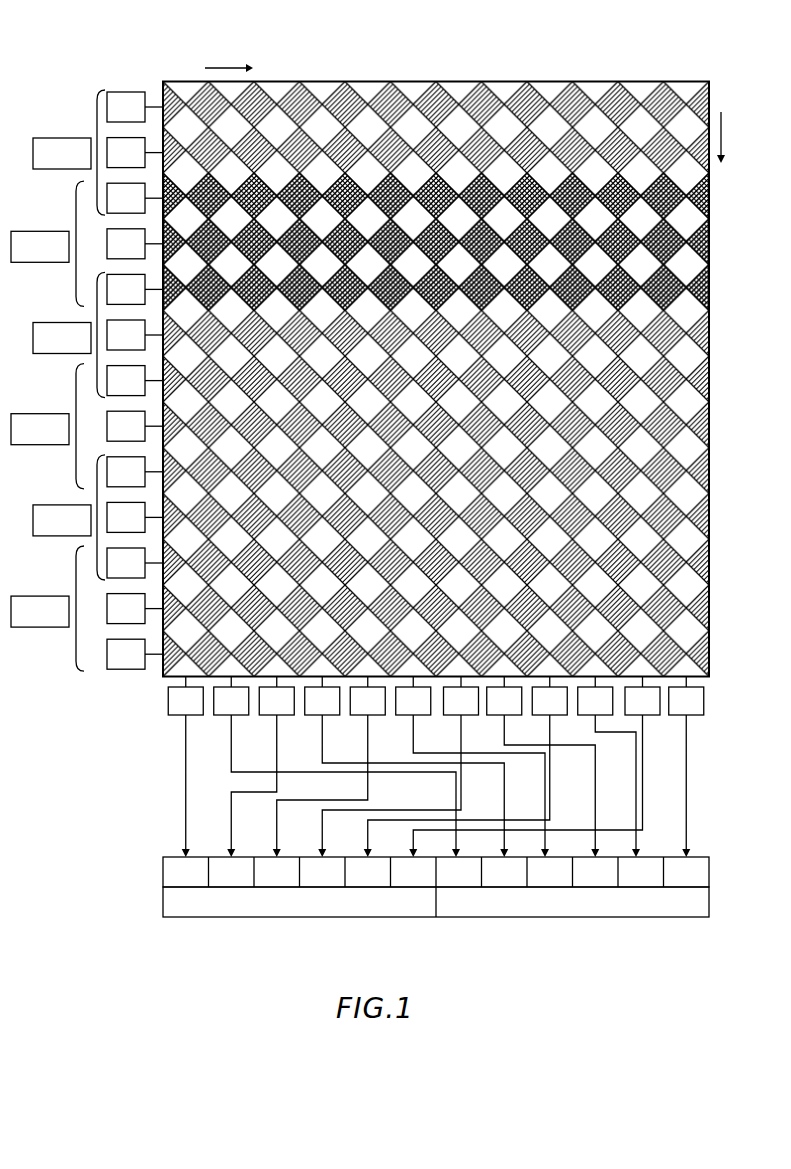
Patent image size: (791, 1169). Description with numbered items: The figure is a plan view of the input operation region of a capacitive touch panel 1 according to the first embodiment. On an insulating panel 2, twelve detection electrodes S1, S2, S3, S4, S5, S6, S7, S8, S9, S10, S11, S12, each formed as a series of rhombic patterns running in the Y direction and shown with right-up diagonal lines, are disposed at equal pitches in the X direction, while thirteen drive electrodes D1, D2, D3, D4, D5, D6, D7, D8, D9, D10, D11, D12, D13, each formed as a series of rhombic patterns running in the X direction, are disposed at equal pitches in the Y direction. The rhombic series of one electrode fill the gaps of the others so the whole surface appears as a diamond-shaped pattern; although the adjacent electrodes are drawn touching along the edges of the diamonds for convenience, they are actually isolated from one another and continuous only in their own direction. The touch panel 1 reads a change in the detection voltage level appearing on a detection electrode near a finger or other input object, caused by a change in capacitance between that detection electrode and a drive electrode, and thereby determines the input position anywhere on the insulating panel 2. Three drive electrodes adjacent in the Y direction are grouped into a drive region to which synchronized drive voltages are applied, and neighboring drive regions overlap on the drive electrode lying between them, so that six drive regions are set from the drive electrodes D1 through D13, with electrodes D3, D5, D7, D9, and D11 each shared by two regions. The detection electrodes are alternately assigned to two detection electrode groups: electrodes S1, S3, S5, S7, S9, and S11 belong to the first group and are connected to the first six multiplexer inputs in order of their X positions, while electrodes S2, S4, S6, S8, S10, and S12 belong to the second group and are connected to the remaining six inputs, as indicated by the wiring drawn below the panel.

The capacitive touch panel 1 is at (378, 52).
The insulating panel 2 is at (513, 82).
The drive electrode D1 is at (135, 107).
The drive electrode D2 is at (135, 153).
The drive electrode D3 is at (135, 198).
The drive electrode D4 is at (135, 244).
The drive electrode D5 is at (135, 289).
The drive electrode D6 is at (135, 335).
The drive electrode D7 is at (135, 381).
The drive electrode D8 is at (135, 426).
The drive electrode D9 is at (135, 472).
The drive electrode D10 is at (135, 517).
The drive electrode D11 is at (135, 563).
The drive electrode D12 is at (135, 609).
The drive electrode D13 is at (135, 654).
The detection electrode S1 is at (185, 696).
The detection electrode S2 is at (231, 696).
The detection electrode S3 is at (276, 696).
The detection electrode S4 is at (322, 696).
The detection electrode S5 is at (367, 696).
The detection electrode S6 is at (413, 696).
The detection electrode S7 is at (461, 696).
The detection electrode S8 is at (504, 696).
The detection electrode S9 is at (549, 696).
The detection electrode S10 is at (595, 696).
The detection electrode S11 is at (642, 696).
The detection electrode S12 is at (686, 696).